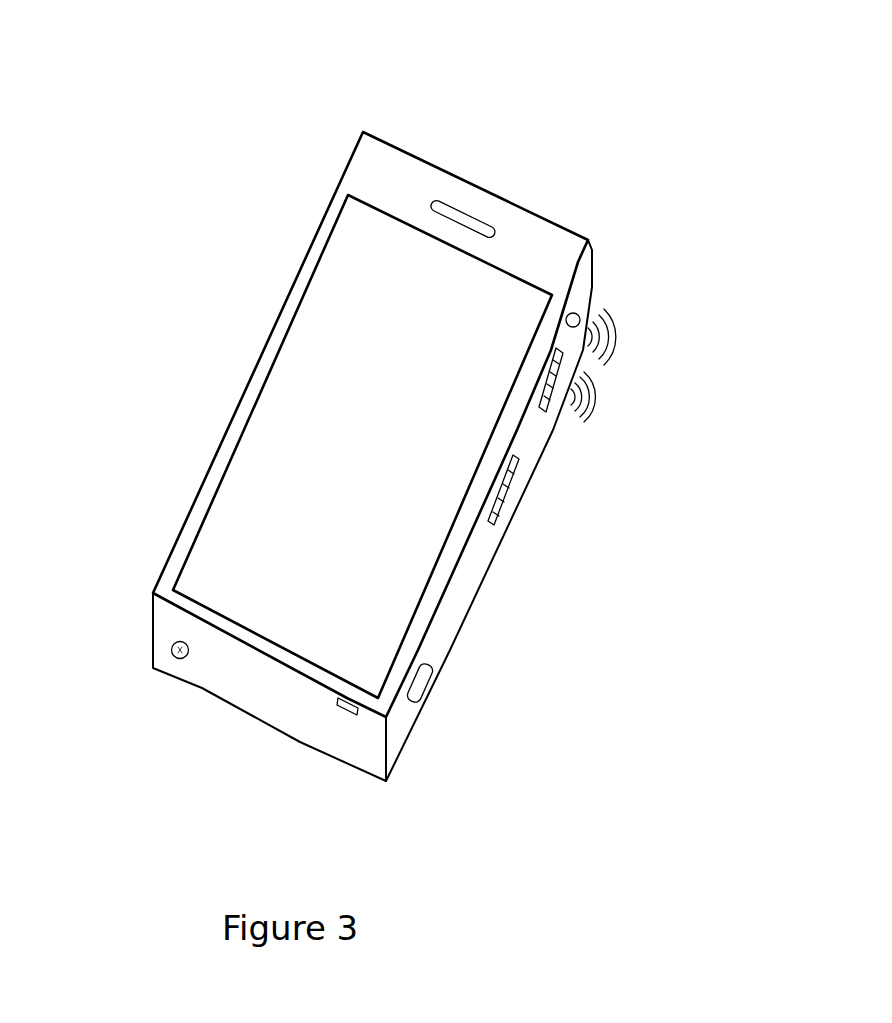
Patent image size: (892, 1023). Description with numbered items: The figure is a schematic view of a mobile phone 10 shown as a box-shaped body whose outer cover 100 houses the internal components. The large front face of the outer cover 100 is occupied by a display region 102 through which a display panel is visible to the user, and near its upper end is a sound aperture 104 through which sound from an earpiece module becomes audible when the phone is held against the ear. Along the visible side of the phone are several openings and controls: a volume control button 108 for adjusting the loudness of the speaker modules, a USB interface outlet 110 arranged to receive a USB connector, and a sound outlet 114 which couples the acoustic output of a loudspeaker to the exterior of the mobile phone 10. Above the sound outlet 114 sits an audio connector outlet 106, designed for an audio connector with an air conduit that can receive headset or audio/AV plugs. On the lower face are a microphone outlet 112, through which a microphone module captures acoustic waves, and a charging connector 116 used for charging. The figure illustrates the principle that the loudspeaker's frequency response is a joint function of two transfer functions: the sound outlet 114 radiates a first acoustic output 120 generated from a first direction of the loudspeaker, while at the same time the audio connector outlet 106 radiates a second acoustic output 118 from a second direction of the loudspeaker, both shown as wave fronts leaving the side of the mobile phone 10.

The mobile phone 10 is at (548, 98).
The outer cover 100 is at (524, 243).
The display region 102 is at (305, 350).
The sound aperture 104 is at (432, 200).
The audio connector outlet 106 is at (596, 302).
The volume control button 108 is at (500, 532).
The USB interface outlet 110 is at (460, 643).
The microphone outlet 112 is at (350, 714).
The sound outlet 114 is at (545, 410).
The charging connector 116 is at (172, 652).
The second acoustic output 118 is at (620, 338).
The first acoustic output 120 is at (592, 417).